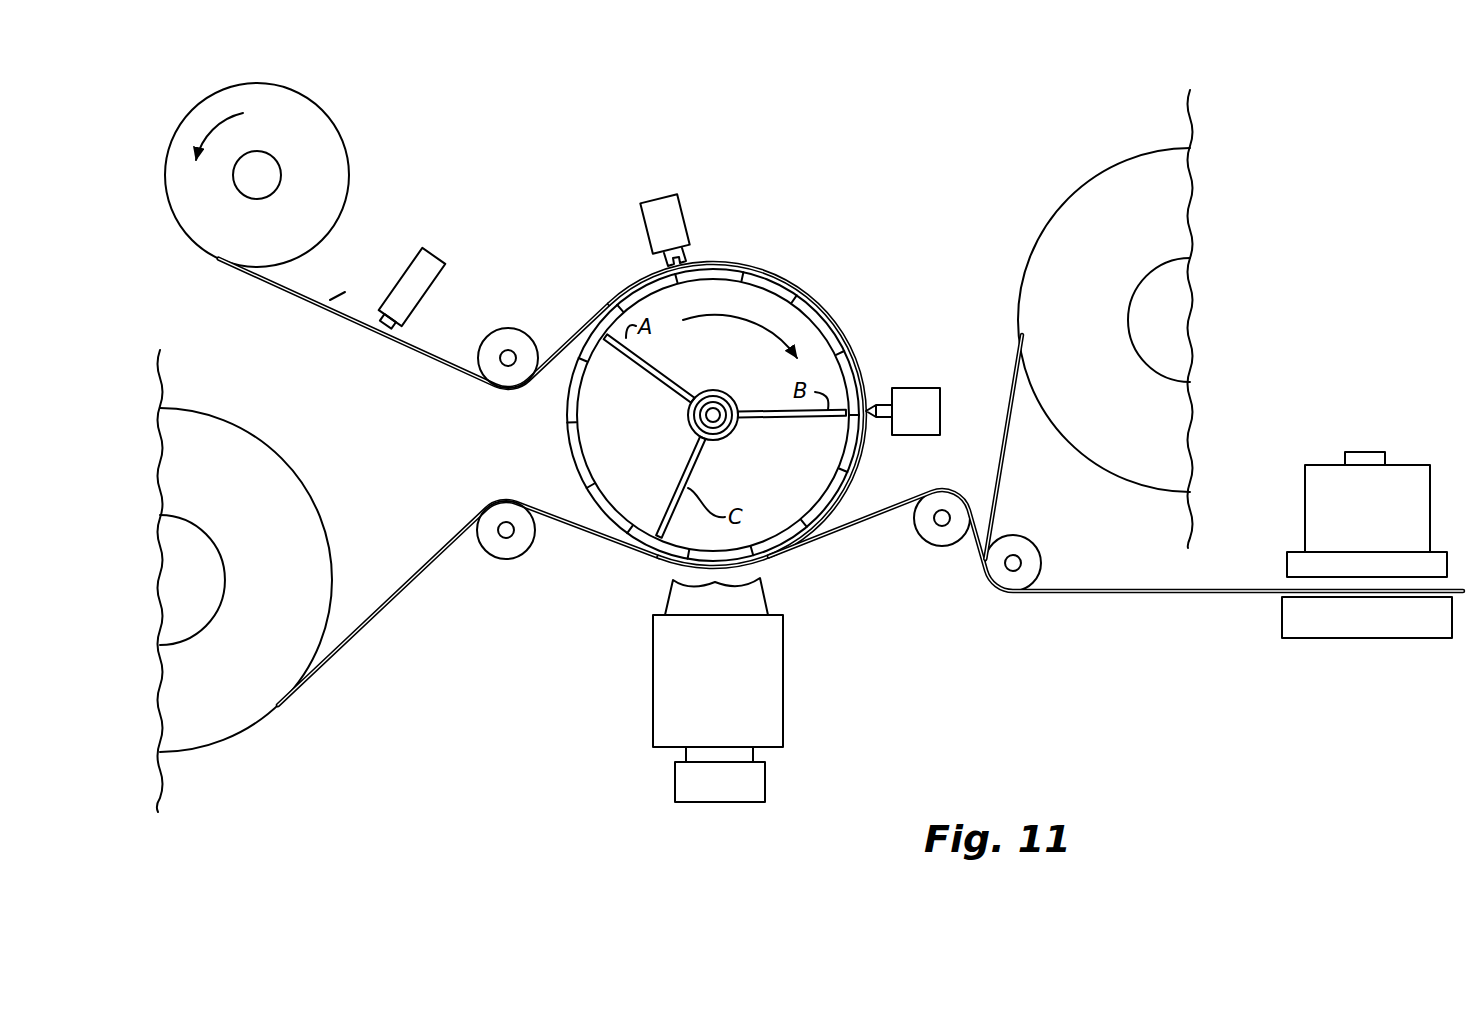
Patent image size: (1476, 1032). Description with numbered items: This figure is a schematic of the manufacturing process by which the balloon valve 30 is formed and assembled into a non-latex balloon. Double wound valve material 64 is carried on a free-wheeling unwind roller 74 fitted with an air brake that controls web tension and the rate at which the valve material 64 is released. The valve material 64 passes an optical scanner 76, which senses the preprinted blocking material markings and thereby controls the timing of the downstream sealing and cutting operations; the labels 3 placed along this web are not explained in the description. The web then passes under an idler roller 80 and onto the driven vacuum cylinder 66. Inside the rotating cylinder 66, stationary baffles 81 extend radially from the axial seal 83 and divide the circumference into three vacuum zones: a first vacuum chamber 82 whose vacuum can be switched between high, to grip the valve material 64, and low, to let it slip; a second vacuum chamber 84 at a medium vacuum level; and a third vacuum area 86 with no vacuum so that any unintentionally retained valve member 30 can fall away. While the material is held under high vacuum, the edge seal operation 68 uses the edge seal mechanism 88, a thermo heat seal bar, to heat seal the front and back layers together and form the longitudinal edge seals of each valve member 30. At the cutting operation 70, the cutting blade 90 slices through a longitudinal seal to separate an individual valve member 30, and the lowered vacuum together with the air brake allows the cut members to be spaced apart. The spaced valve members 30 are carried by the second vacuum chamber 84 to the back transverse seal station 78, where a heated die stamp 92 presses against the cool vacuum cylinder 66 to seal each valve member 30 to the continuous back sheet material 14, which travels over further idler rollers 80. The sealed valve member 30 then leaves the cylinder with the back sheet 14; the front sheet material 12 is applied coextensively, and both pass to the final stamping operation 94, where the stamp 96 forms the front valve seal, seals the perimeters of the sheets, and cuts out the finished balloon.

The web material 3 is at (305, 283).
The front sheet material 12 is at (1007, 442).
The back sheet material 14 is at (382, 604).
The valve member 30 is at (860, 489).
The double wound valve material 64 is at (330, 303).
The vacuum cylinder 66 is at (792, 288).
The edge seal operation 68 is at (680, 193).
The cutting operation 70 is at (939, 404).
The unwind roller 74 is at (318, 108).
The optical scanner 76 is at (428, 282).
The back transverse seal station 78 is at (786, 672).
The idler roller 80 is at (495, 336).
The baffles 81 is at (846, 350).
The first vacuum chamber 82 is at (722, 355).
The axial seal 83 is at (718, 392).
The second vacuum chamber 84 is at (787, 480).
The third vacuum area 86 is at (652, 445).
The edge seal mechanism 88 is at (663, 262).
The cutting blade 90 is at (878, 402).
The die stamp 92 is at (700, 588).
The final stamping operation 94 is at (1310, 644).
The stamp 96 is at (1338, 483).